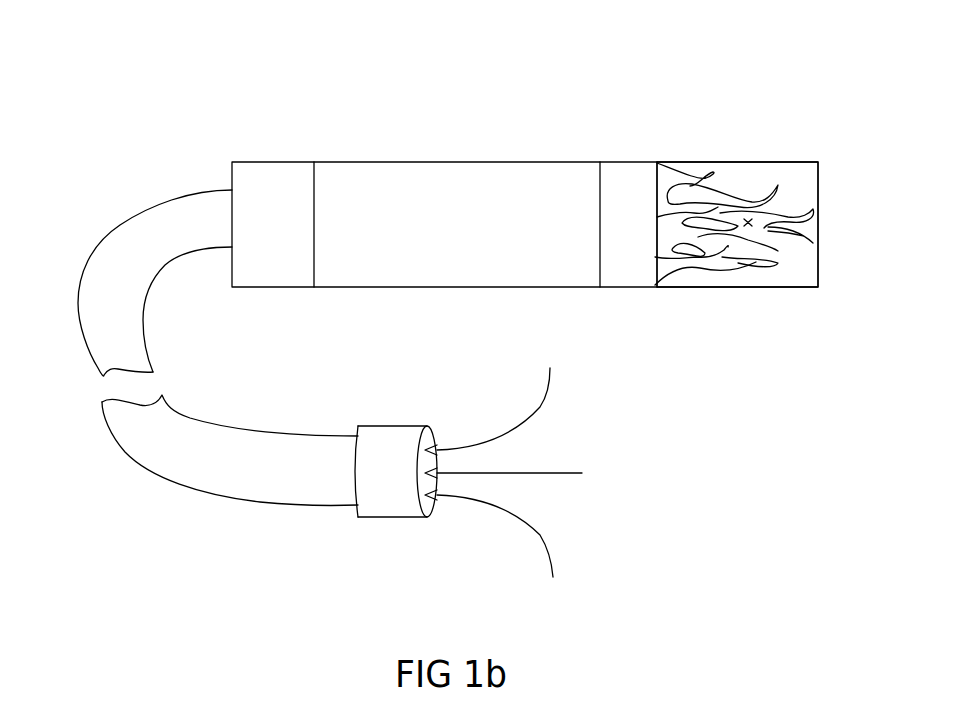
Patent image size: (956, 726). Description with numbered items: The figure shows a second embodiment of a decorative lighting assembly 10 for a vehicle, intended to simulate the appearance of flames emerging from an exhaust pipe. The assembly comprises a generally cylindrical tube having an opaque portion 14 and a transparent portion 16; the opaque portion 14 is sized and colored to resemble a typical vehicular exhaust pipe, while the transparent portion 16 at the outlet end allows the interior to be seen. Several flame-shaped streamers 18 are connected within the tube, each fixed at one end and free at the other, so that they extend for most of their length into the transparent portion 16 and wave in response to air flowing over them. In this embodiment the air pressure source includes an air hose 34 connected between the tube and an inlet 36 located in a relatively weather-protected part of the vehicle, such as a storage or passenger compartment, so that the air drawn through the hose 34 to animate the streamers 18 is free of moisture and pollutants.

The decorative lighting assembly 10 is at (271, 160).
The opaque portion 14 is at (625, 158).
The transparent portion 16 is at (742, 160).
The streamers 18 is at (715, 267).
The air hose 34 is at (130, 333).
The inlet 36 is at (396, 435).